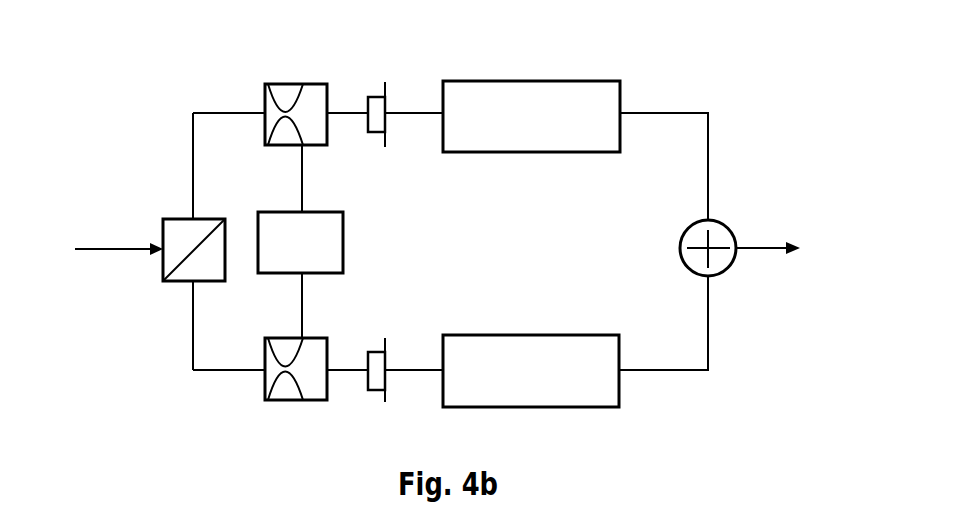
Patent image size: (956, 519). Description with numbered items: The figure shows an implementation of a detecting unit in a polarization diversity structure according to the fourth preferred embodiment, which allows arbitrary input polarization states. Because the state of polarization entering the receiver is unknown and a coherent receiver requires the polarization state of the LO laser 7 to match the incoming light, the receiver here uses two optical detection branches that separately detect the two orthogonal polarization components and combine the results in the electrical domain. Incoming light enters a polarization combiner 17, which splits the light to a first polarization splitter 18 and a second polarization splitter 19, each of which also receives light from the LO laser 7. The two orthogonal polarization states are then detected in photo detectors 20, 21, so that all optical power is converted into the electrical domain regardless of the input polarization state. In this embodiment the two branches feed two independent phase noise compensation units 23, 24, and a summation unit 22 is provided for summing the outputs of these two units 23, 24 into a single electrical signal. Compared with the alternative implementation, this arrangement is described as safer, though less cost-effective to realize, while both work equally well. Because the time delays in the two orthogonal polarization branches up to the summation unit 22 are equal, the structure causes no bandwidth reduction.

The LO laser 7 is at (333, 240).
The polarization combiner 17 is at (185, 270).
The first polarization splitter 18 is at (286, 94).
The second polarization splitter 19 is at (277, 392).
The photo detector 20 is at (378, 105).
The photo detector 21 is at (388, 364).
The summation unit 22 is at (722, 220).
The phase noise compensation unit 23 is at (553, 112).
The phase noise compensation unit 24 is at (533, 352).